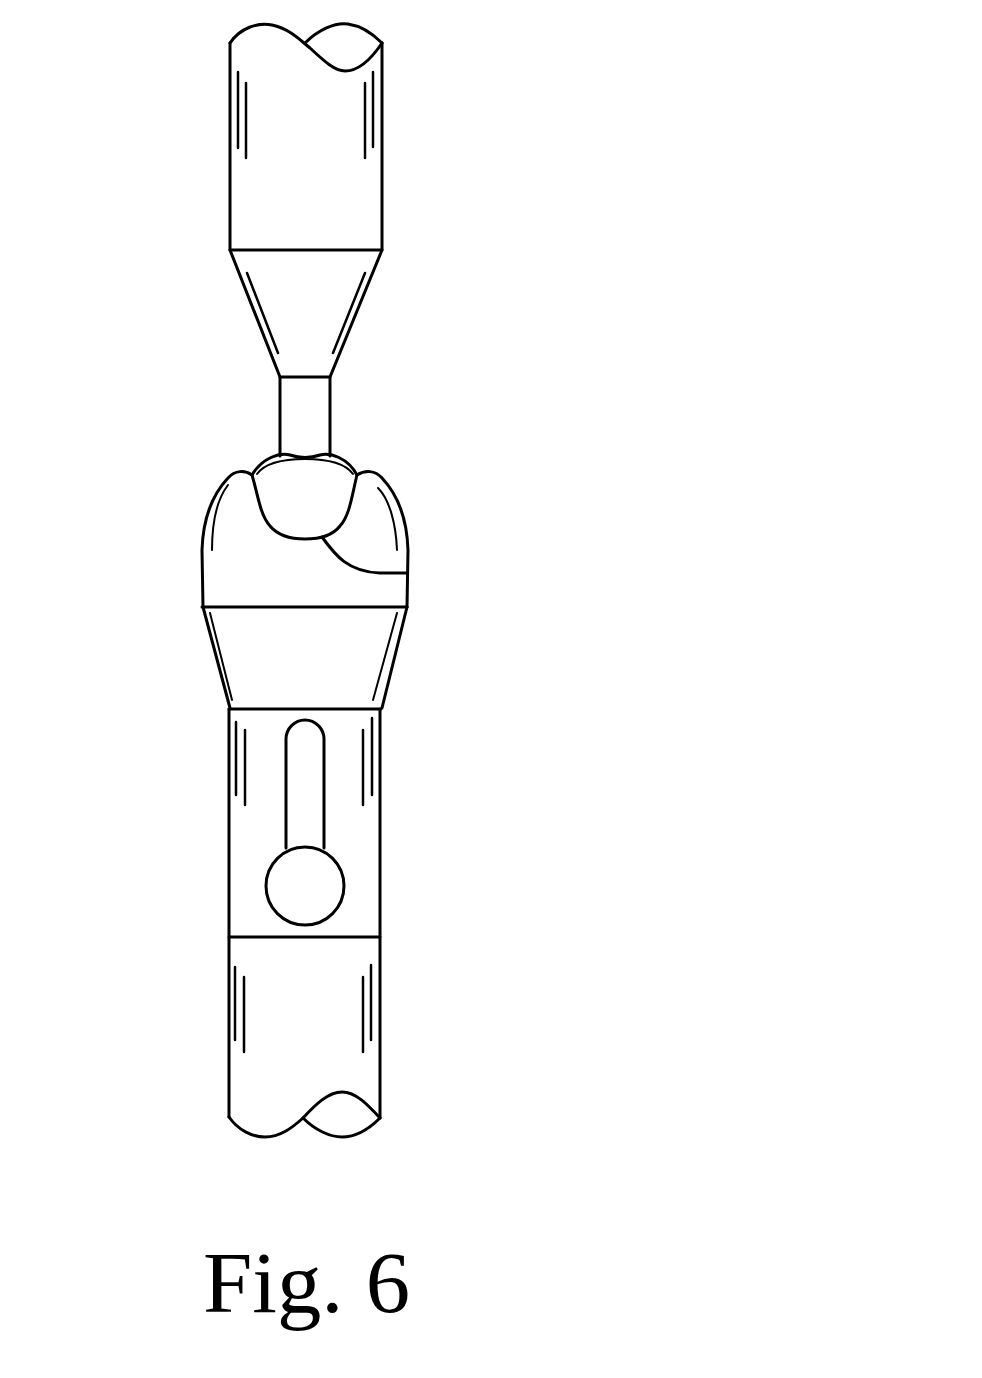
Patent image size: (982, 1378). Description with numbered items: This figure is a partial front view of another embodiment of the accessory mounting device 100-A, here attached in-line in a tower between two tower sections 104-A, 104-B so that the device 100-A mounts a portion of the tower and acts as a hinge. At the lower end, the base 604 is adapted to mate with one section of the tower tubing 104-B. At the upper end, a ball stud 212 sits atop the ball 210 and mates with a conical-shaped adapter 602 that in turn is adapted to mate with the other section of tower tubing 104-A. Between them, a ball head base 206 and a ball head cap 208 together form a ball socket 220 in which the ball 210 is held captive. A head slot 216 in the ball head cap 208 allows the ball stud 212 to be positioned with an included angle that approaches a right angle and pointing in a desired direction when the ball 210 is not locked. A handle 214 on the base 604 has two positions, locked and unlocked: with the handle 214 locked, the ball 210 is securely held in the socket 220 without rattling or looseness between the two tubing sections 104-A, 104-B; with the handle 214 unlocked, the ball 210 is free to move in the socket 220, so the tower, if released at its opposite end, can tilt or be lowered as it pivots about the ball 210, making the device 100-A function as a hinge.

The accessory mounting device 100-A is at (685, 453).
The tower section 104-A is at (382, 200).
The conical-shaped adapter 602 is at (354, 320).
The ball stud 212 is at (280, 413).
The ball 210 is at (352, 455).
The ball head cap 208 is at (402, 507).
The head slot 216 is at (407, 573).
The ball head base 206 is at (400, 638).
The ball socket 220 is at (322, 595).
The base 604 is at (334, 826).
The handle 214 is at (265, 895).
The tower section 104-B is at (380, 1027).